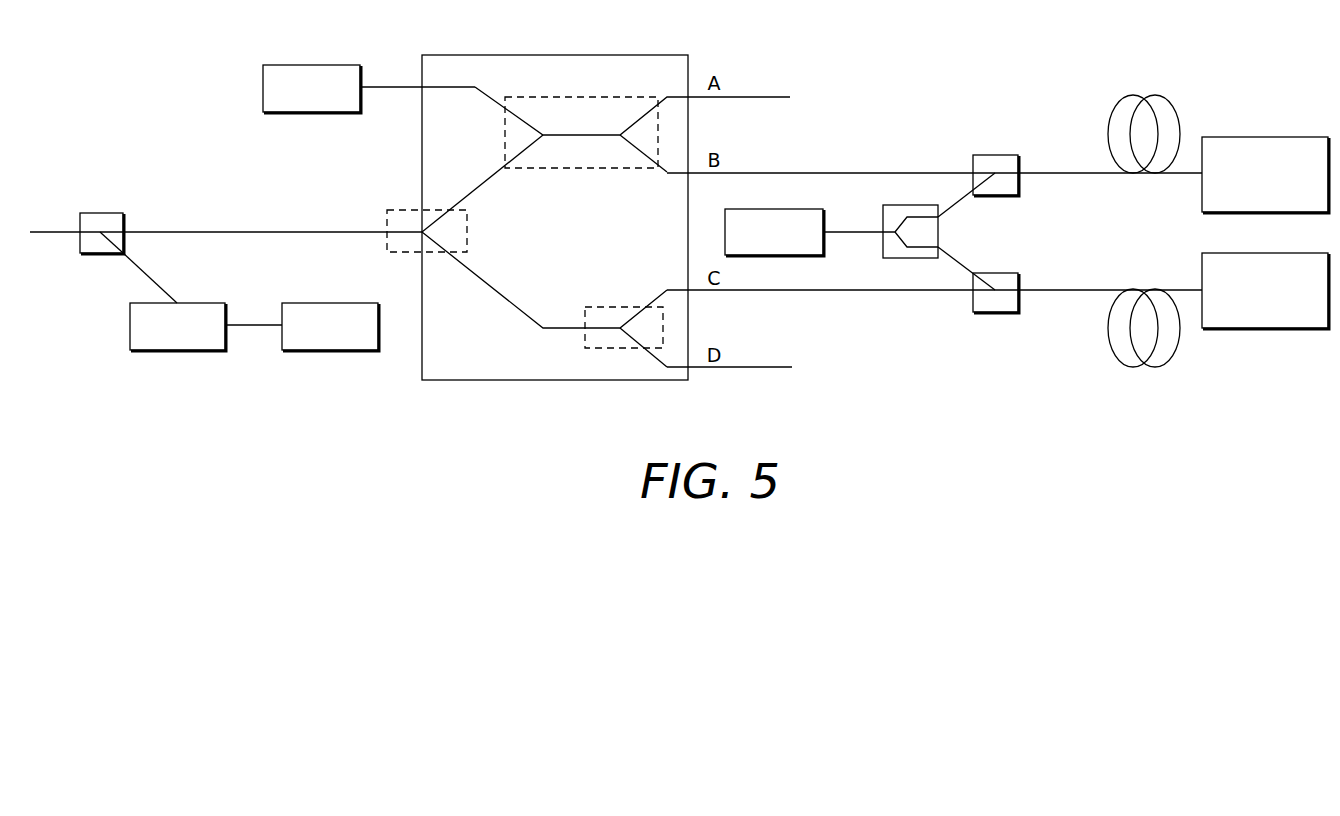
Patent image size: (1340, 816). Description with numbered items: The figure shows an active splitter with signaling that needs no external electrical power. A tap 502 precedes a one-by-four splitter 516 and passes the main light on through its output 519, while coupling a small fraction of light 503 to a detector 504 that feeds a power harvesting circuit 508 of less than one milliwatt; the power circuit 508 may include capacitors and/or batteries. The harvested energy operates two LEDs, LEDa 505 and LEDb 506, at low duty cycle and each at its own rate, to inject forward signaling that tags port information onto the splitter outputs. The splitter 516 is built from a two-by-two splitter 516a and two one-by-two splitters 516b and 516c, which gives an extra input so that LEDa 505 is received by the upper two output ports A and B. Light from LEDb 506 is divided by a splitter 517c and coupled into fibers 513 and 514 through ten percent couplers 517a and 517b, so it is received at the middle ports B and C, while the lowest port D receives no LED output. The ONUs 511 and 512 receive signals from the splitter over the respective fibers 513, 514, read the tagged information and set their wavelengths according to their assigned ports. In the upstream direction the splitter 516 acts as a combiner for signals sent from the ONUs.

The tap 502 is at (78, 243).
The fraction of light 503 is at (145, 273).
The detector 504 is at (177, 351).
The LEDa 505 is at (278, 64).
The LEDb 506 is at (760, 209).
The power harvesting circuit 508 is at (328, 351).
The ONU 511 is at (1288, 137).
The ONU 512 is at (1288, 253).
The fiber 513 is at (1133, 95).
The fiber 514 is at (1133, 368).
The 1×N splitter 516 is at (470, 55).
The 2×2 splitter 516a is at (582, 97).
The 1×2 splitter 516b is at (398, 210).
The 1×2 splitter 516c is at (597, 307).
The 10% coupler 517a is at (1003, 155).
The 10% coupler 517b is at (1003, 273).
The splitter 517c is at (912, 205).
The output 519 is at (228, 230).